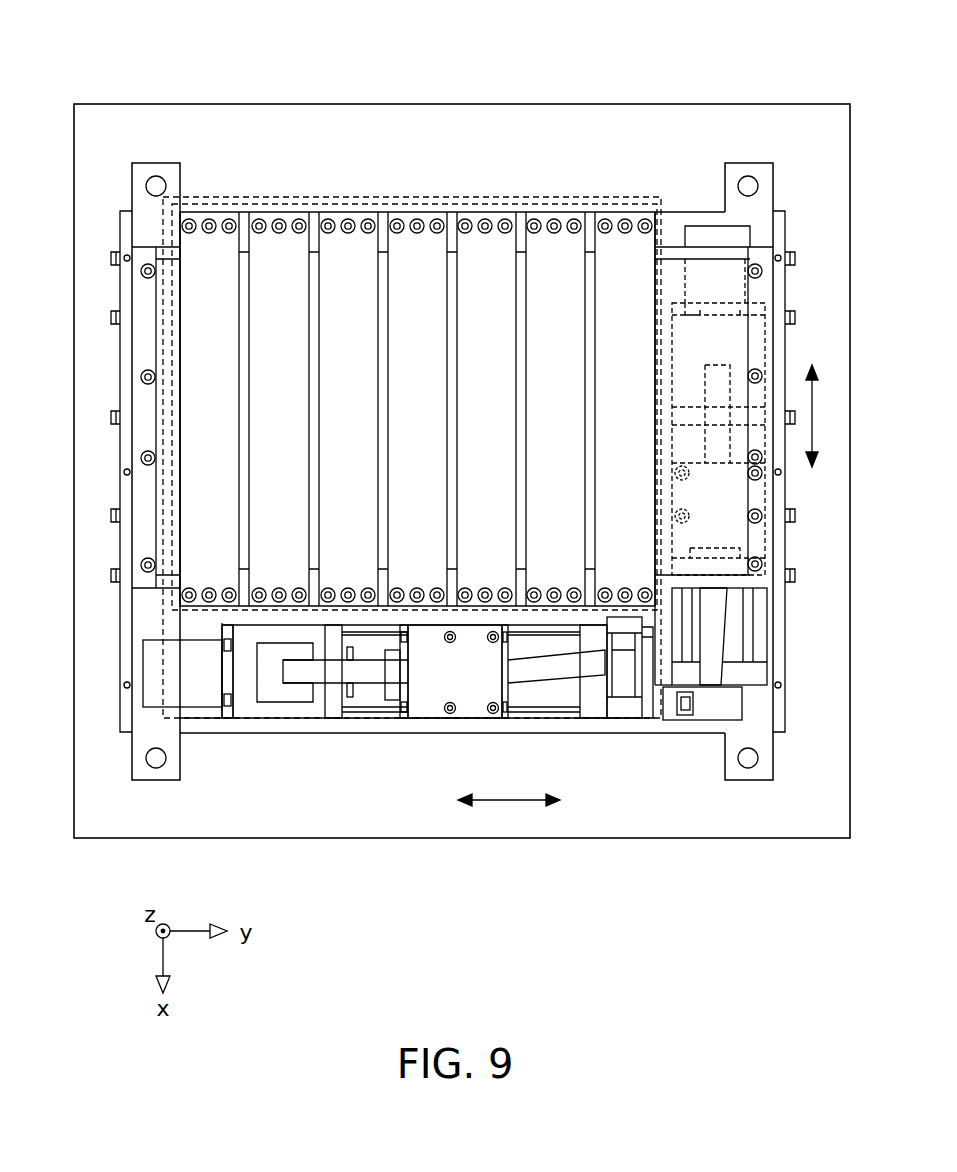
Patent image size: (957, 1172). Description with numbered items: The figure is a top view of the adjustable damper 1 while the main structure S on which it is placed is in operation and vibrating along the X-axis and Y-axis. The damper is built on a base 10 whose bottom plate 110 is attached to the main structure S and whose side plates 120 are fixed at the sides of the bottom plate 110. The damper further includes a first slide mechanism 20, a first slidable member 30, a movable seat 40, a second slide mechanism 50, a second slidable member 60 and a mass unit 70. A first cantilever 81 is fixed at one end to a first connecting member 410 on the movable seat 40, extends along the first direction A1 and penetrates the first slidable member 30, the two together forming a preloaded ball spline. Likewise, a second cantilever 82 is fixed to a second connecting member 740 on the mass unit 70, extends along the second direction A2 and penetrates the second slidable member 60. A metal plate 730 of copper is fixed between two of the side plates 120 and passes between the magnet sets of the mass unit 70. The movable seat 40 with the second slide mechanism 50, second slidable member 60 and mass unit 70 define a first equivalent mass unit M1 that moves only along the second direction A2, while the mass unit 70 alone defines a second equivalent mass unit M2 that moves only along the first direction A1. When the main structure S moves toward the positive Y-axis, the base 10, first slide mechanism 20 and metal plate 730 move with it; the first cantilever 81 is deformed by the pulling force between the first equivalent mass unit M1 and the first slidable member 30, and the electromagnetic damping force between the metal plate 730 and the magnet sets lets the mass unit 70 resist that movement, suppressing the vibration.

The main structure S is at (482, 90).
The adjustable damper 1 is at (237, 158).
The base 10 is at (460, 446).
The bottom plate 110 is at (137, 187).
The side plates 120 is at (127, 392).
The first equivalent mass unit M1 is at (412, 204).
The second equivalent mass unit M2 is at (343, 197).
The mass unit 70 is at (562, 258).
The metal plate 730 is at (745, 418).
The first slidable member 30 is at (725, 537).
The first direction A1 is at (825, 416).
The first slide mechanism 20 is at (746, 689).
The first cantilever 81 is at (717, 620).
The first connecting member 410 is at (711, 704).
The movable seat 40 is at (207, 712).
The second slide mechanism 50 is at (399, 703).
The second slidable member 60 is at (437, 700).
The second cantilever 82 is at (558, 670).
The second connecting member 740 is at (626, 680).
The second direction A2 is at (509, 813).